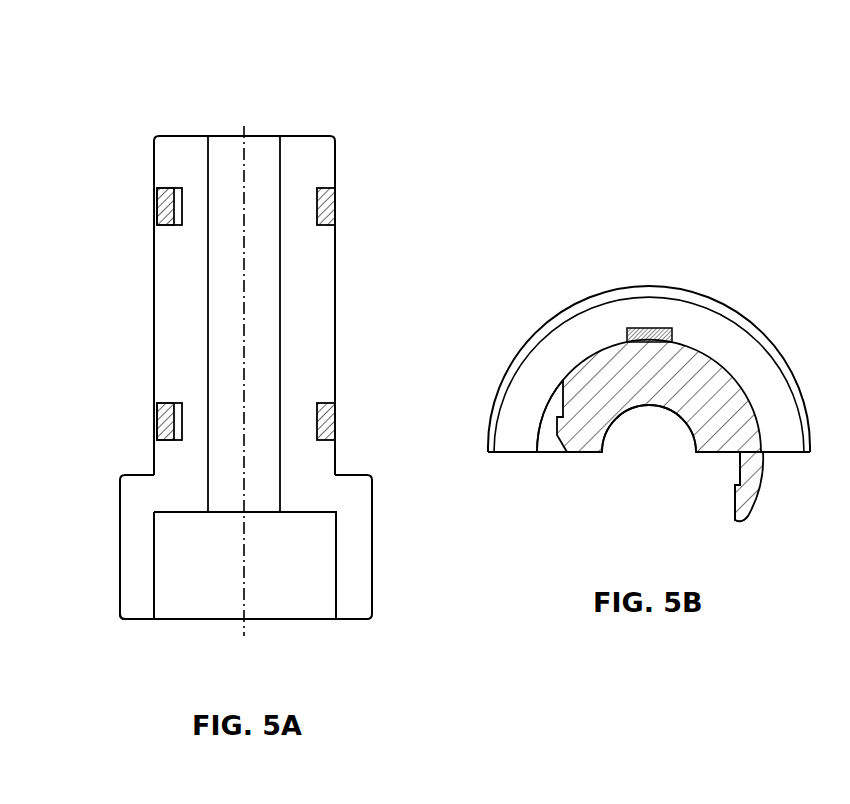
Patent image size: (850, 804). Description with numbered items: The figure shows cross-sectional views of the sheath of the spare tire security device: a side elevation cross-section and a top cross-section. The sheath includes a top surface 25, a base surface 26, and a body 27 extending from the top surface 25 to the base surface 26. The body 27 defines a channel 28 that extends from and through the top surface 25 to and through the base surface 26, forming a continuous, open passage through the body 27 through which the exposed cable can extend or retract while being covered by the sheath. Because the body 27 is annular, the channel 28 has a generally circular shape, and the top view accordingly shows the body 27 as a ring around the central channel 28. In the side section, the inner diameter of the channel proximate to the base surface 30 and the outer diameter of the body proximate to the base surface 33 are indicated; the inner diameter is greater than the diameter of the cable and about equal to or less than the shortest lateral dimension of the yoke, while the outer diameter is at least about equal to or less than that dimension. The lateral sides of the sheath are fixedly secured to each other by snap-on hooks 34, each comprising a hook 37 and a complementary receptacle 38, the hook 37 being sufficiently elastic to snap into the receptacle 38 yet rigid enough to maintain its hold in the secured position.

In FIG. 5A, the top surface 25 is at (176, 134).
In FIG. 5A, the base surface 26 is at (145, 622).
In FIG. 5A, the body 27 is at (115, 135).
In FIG. 5A, the channel 28 is at (245, 137).
In FIG. 5B, the channel 28 is at (664, 456).
In FIG. 5A, the inner diameter of the channel proximate to the base surface 30 is at (157, 590).
In FIG. 5A, the outer diameter of the body proximate to the base surface 33 is at (372, 623).
In FIG. 5B, the snap-on hooks 34 is at (758, 488).
In FIG. 5A, the hook 37 is at (336, 210).
In FIG. 5B, the hook 37 is at (735, 505).
In FIG. 5A, the receptacle 38 is at (157, 428).
In FIG. 5B, the receptacle 38 is at (557, 436).